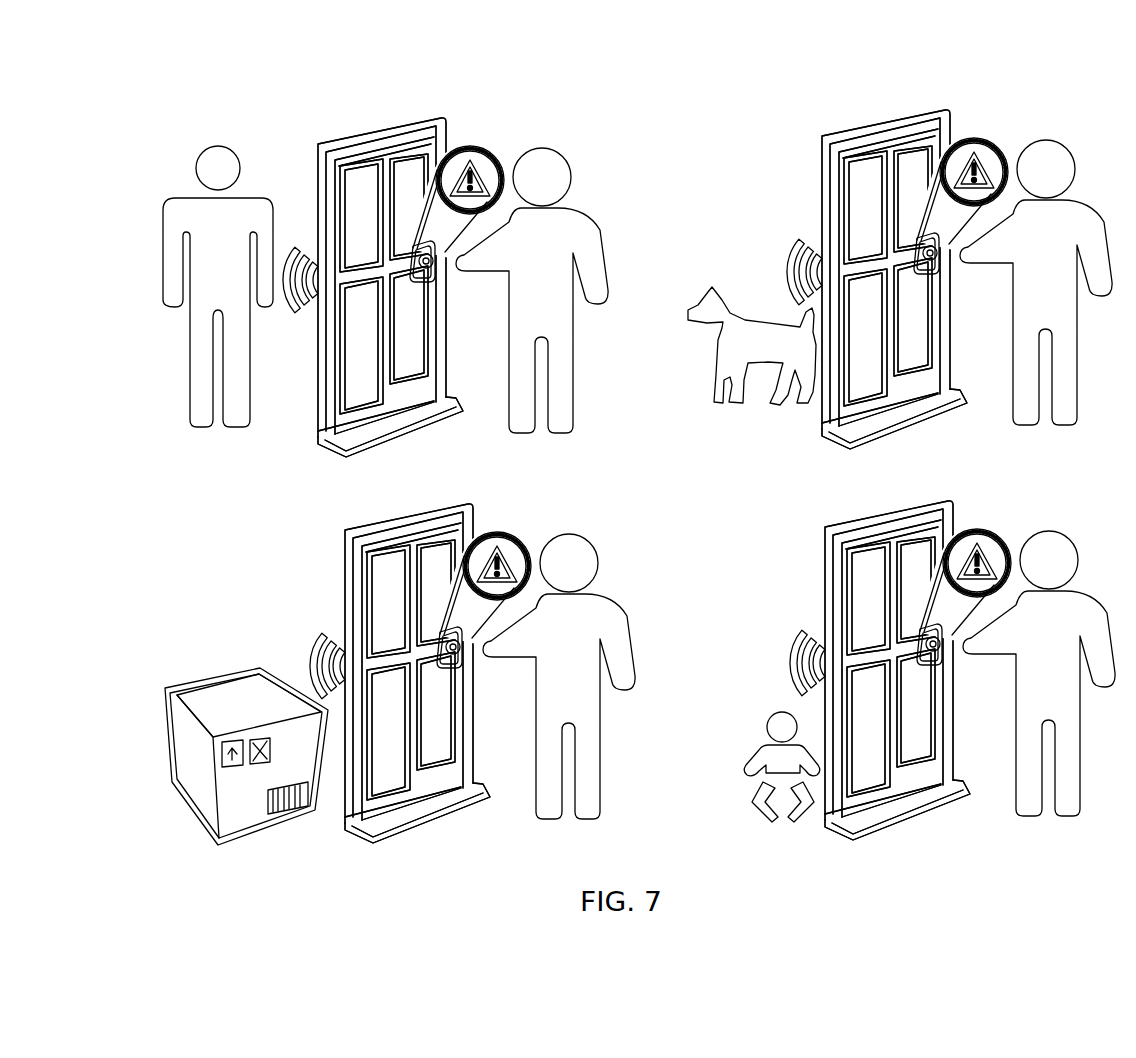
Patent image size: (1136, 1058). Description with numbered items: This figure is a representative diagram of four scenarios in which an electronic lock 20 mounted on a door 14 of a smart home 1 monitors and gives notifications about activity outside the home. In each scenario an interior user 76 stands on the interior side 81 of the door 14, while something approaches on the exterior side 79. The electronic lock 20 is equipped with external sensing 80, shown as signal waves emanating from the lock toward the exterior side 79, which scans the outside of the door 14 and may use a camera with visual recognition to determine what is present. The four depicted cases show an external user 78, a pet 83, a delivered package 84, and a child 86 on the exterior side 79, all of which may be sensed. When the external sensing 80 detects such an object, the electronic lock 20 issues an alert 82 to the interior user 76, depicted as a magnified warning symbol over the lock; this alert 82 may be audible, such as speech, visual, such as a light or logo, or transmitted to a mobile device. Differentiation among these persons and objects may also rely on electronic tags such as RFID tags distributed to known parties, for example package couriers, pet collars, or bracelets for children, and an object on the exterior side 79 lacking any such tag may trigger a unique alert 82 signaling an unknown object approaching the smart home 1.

The smart home 1 is at (423, 93).
The door 14 is at (435, 130).
The electronic lock 20 is at (428, 265).
The interior user 76 is at (567, 222).
The external user 78 is at (210, 160).
The exterior side 79 is at (292, 88).
The external sensing 80 is at (289, 298).
The interior side 81 is at (572, 120).
The alert 82 is at (472, 172).
The pet 83 is at (712, 302).
The delivered package 84 is at (208, 690).
The child 86 is at (772, 723).